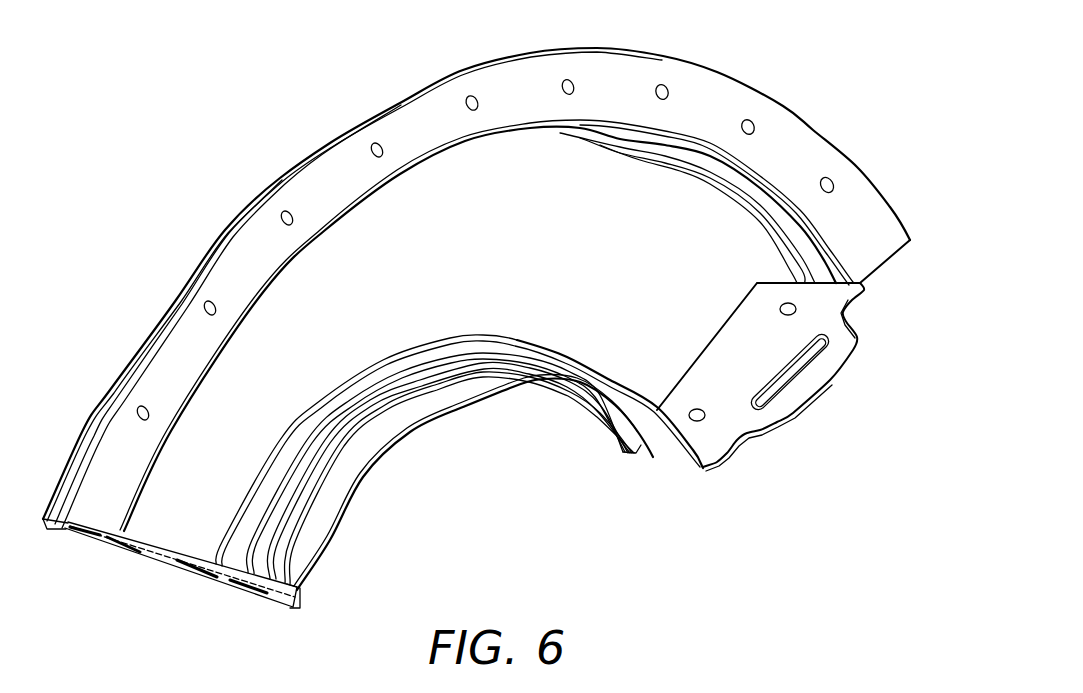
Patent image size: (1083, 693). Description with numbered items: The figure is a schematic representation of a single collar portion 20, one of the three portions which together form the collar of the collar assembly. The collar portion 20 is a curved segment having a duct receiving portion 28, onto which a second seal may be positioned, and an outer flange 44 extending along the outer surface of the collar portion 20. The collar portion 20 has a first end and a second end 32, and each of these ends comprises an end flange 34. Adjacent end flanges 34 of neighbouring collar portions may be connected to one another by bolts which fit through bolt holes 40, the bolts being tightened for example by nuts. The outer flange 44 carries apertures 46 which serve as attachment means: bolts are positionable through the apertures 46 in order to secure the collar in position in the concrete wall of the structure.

The collar portion 20 is at (471, 340).
The duct receiving portion 28 is at (463, 407).
The second end 32 is at (147, 548).
The end flange 34 is at (727, 423).
The bolt hole 40 is at (780, 307).
The outer flange 44 is at (322, 178).
The aperture 46 is at (470, 97).